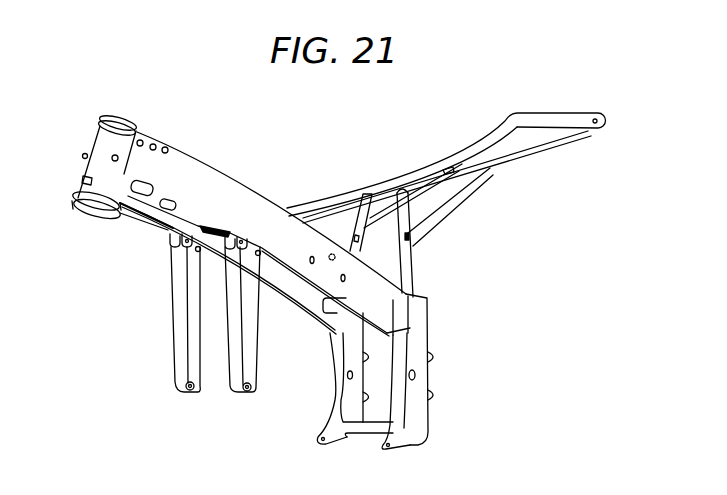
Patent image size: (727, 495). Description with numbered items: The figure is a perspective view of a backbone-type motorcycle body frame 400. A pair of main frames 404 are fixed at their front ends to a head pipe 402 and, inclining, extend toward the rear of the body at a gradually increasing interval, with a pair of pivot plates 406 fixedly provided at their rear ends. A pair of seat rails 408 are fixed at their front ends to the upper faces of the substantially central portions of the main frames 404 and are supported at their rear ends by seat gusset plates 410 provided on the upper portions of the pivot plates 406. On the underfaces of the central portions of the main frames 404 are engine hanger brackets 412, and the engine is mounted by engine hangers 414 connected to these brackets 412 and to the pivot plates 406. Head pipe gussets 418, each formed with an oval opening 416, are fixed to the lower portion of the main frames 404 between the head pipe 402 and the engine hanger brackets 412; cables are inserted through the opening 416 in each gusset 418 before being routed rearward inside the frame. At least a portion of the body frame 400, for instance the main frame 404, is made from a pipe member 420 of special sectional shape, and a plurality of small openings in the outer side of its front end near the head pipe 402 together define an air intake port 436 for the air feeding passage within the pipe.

The body frame 400 is at (425, 105).
The head pipe 402 is at (102, 138).
The main frame 404 is at (214, 166).
The pivot plate 406 is at (348, 395).
The seat rail 408 is at (377, 199).
The seat gusset plate 410 is at (358, 248).
The engine hanger bracket 412 is at (255, 243).
The engine hanger 414 is at (235, 355).
The oval opening 416 is at (152, 181).
The head pipe gusset 418 is at (173, 229).
The pipe member 420 is at (240, 191).
The air intake port 436 is at (166, 147).